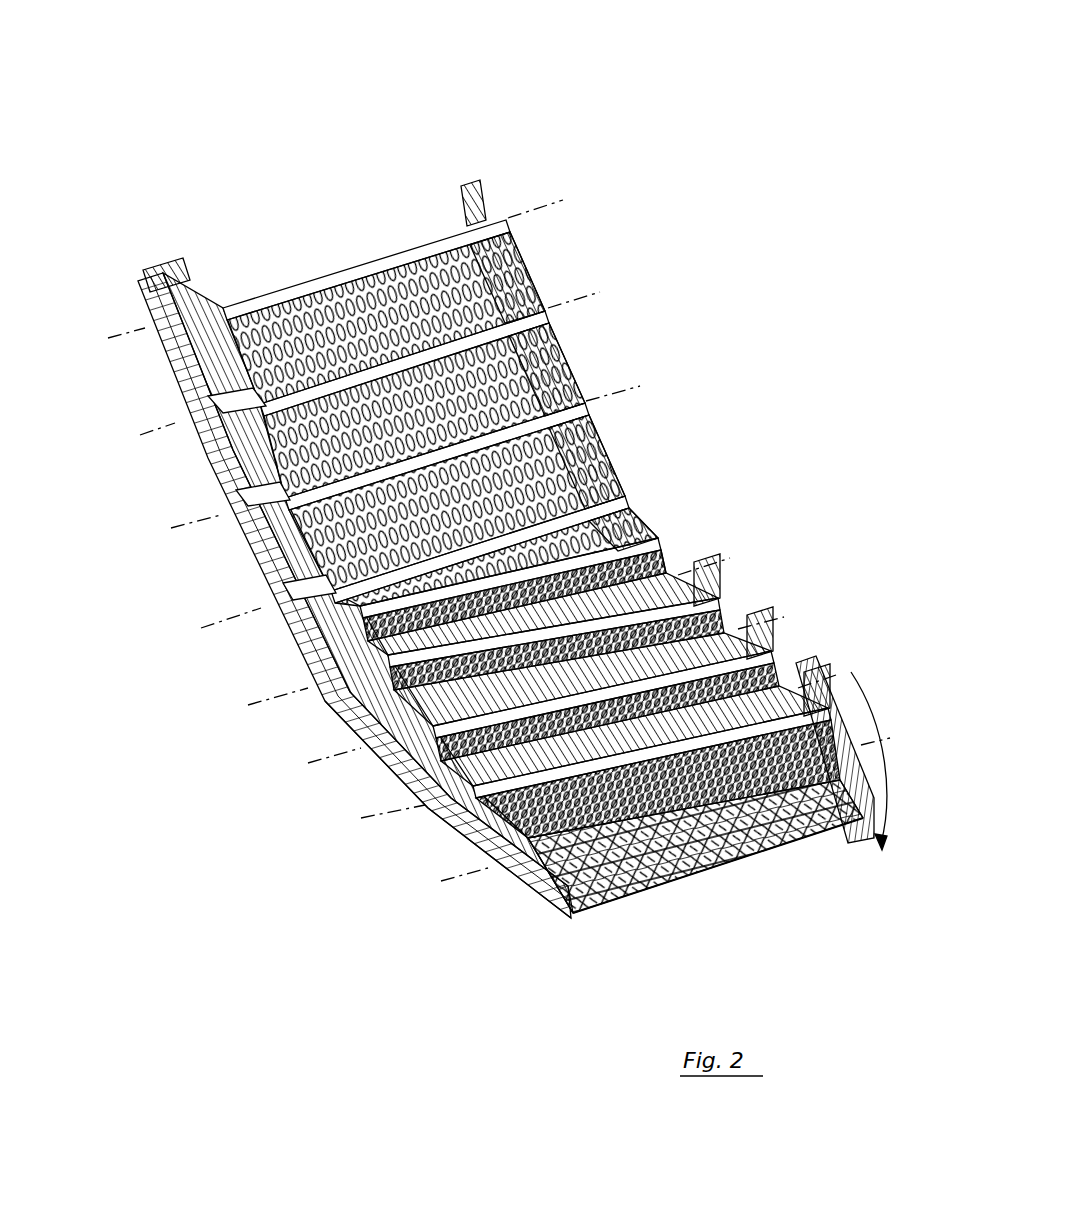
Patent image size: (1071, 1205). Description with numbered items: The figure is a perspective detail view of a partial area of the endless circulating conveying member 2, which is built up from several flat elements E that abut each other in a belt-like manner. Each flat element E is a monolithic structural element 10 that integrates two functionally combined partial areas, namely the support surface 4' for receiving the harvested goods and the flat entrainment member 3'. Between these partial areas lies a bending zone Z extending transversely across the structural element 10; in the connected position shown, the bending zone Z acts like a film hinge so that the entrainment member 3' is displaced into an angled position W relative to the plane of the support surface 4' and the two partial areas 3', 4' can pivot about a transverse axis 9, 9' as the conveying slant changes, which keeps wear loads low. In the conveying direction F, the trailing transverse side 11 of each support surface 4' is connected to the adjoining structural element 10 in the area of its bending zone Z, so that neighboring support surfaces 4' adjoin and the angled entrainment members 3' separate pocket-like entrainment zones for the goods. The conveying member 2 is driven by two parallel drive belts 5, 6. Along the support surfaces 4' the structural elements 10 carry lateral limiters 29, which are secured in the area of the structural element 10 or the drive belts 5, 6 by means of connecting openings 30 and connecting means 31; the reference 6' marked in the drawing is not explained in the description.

The conveying member 2 is at (501, 511).
The lateral limiters 29 is at (156, 262).
The conveying direction of rollers 6' is at (433, 373).
The support surface 4' is at (650, 620).
The entrainment member 3' is at (602, 647).
The bending zone Z is at (682, 642).
The structural element 10 is at (780, 858).
The connecting means 31 is at (826, 823).
The connecting openings 30 is at (853, 830).
The trailing transverse side 11 is at (711, 882).
The drive belt 6 is at (835, 749).
The angled position W is at (842, 656).
The transverse axis 9 is at (499, 873).
The drive belt 5 is at (454, 838).
The transverse axis 9' is at (355, 595).
The flat element E is at (574, 173).
The conveying direction F is at (728, 290).